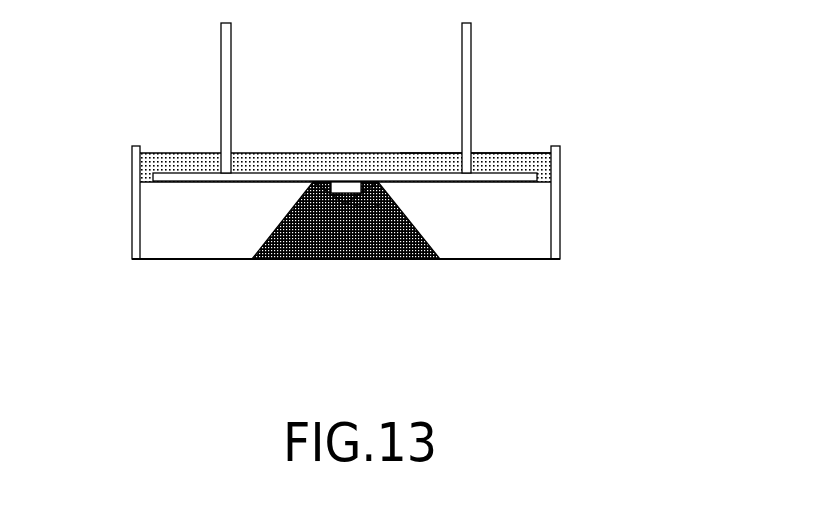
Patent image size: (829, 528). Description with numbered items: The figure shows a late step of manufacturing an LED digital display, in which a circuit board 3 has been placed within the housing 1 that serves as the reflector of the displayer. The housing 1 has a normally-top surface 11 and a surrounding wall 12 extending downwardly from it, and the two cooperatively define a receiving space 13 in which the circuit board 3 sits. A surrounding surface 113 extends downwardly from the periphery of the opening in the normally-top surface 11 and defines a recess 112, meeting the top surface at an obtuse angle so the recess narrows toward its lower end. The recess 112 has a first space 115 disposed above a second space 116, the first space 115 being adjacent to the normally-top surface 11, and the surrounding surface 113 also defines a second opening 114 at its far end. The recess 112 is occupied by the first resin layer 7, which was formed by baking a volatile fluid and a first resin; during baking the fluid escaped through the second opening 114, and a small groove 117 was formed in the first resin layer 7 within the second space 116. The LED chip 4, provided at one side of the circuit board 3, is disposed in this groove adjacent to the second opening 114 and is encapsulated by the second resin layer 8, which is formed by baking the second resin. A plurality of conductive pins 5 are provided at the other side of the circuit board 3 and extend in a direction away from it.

The housing 1 is at (116, 146).
The circuit board 3 is at (522, 179).
The LED chip 4 is at (342, 188).
The conductive pins 5 is at (231, 49).
The first resin layer 7 is at (388, 228).
The second resin layer 8 is at (508, 152).
The normally-top surface 11 is at (205, 262).
The surrounding wall 12 is at (560, 232).
The receiving space 13 is at (160, 152).
The recess 112 is at (345, 244).
The surrounding surface 113 is at (281, 252).
The second opening 114 is at (321, 179).
The first space 115 is at (313, 247).
The second space 116 is at (368, 180).
The small groove 117 is at (380, 205).